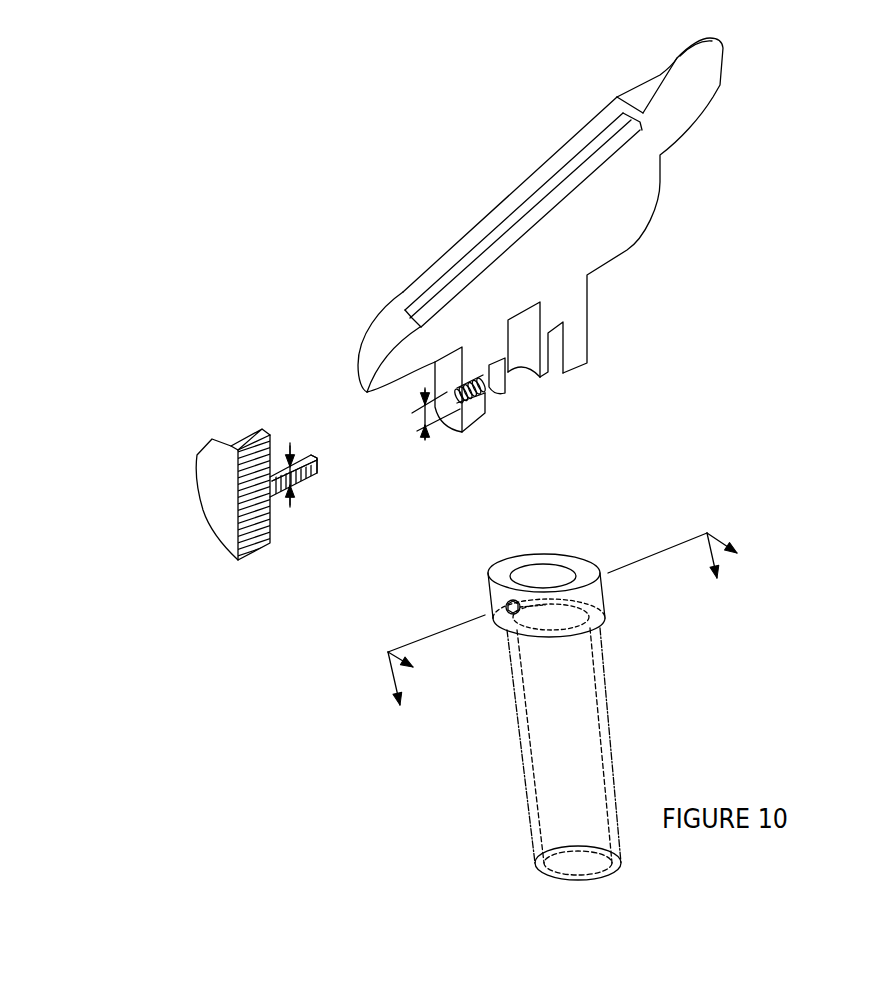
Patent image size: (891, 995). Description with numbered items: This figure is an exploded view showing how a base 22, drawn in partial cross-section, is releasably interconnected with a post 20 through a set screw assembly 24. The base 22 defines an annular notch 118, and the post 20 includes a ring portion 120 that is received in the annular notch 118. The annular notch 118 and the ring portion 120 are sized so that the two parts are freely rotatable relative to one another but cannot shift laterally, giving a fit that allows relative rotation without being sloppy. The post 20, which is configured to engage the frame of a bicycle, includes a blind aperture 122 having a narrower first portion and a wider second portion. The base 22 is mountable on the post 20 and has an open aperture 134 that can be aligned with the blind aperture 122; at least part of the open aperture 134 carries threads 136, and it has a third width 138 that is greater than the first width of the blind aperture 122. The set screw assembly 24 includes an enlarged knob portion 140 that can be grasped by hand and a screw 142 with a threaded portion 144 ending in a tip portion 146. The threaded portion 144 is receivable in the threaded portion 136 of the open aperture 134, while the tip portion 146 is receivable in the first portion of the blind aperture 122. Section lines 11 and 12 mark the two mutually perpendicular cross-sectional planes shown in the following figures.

The base 22 is at (611, 252).
The annular notch 118 is at (557, 355).
The open aperture 134 is at (523, 403).
The threaded portion of the open aperture 136 is at (467, 403).
The third width 138 is at (436, 427).
The set screw assembly 24 is at (216, 485).
The enlarged knob portion 140 is at (225, 493).
The screw 142 is at (307, 447).
The threaded portion 144 is at (301, 480).
The tip portion 146 is at (316, 474).
The post 20 is at (600, 675).
The ring portion 120 is at (600, 554).
The blind aperture 122 is at (482, 602).
The section lines 11- 11 is at (537, 629).
The section lines 12- 12 is at (579, 612).